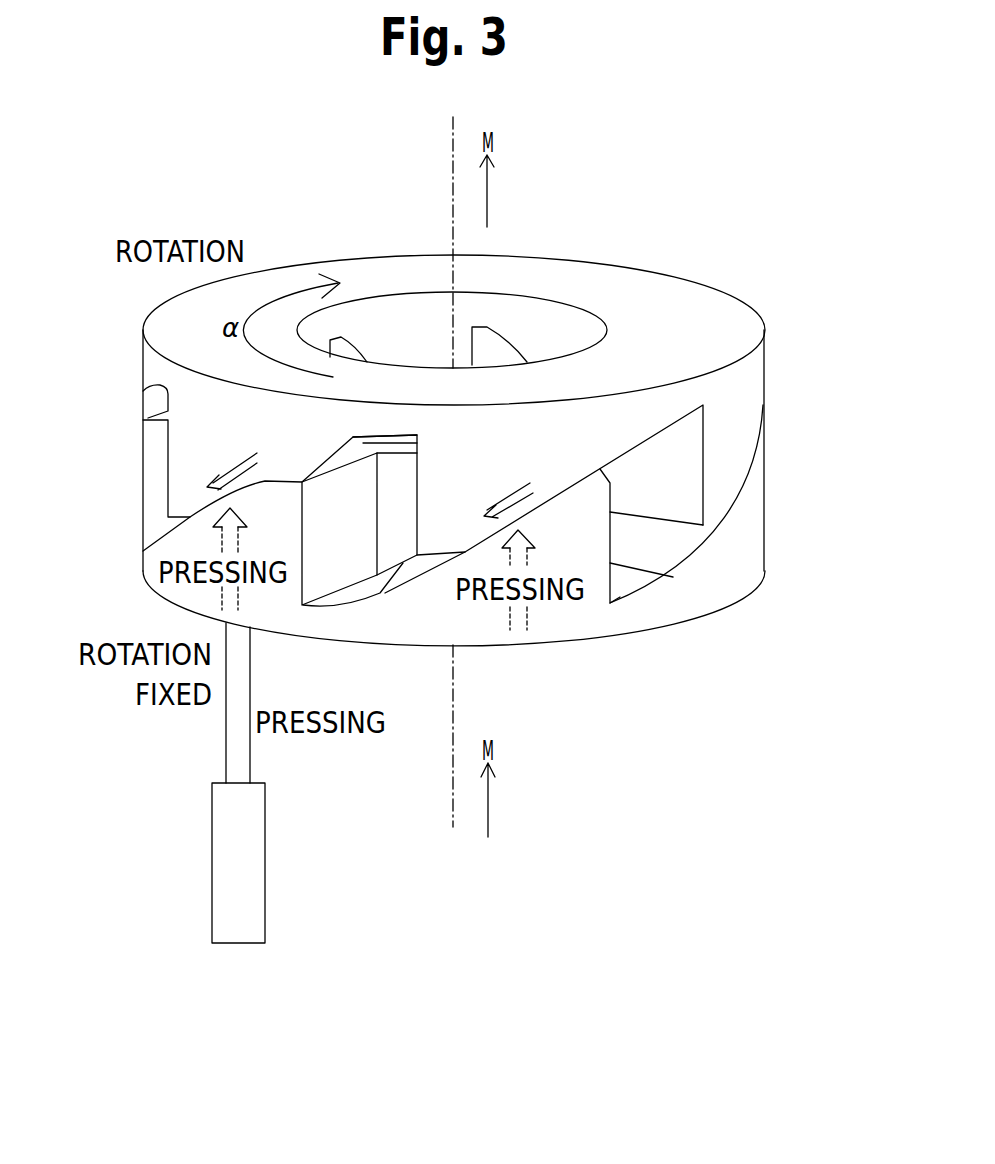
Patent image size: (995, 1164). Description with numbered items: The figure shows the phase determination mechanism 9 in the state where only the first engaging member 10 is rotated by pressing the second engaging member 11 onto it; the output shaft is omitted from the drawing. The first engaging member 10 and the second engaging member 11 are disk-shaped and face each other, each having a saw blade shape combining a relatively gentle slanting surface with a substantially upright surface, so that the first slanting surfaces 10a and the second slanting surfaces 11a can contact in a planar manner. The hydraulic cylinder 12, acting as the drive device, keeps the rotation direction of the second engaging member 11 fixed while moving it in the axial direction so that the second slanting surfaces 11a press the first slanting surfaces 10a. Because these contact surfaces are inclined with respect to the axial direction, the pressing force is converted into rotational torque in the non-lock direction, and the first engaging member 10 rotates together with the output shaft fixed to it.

The phase determination mechanism 9 is at (449, 437).
The first engaging member 10 is at (765, 384).
The first slanting surfaces 10a is at (333, 453).
The second engaging member 11 is at (765, 526).
The second slanting surfaces 11a is at (166, 538).
The hydraulic cylinder 12 is at (262, 870).